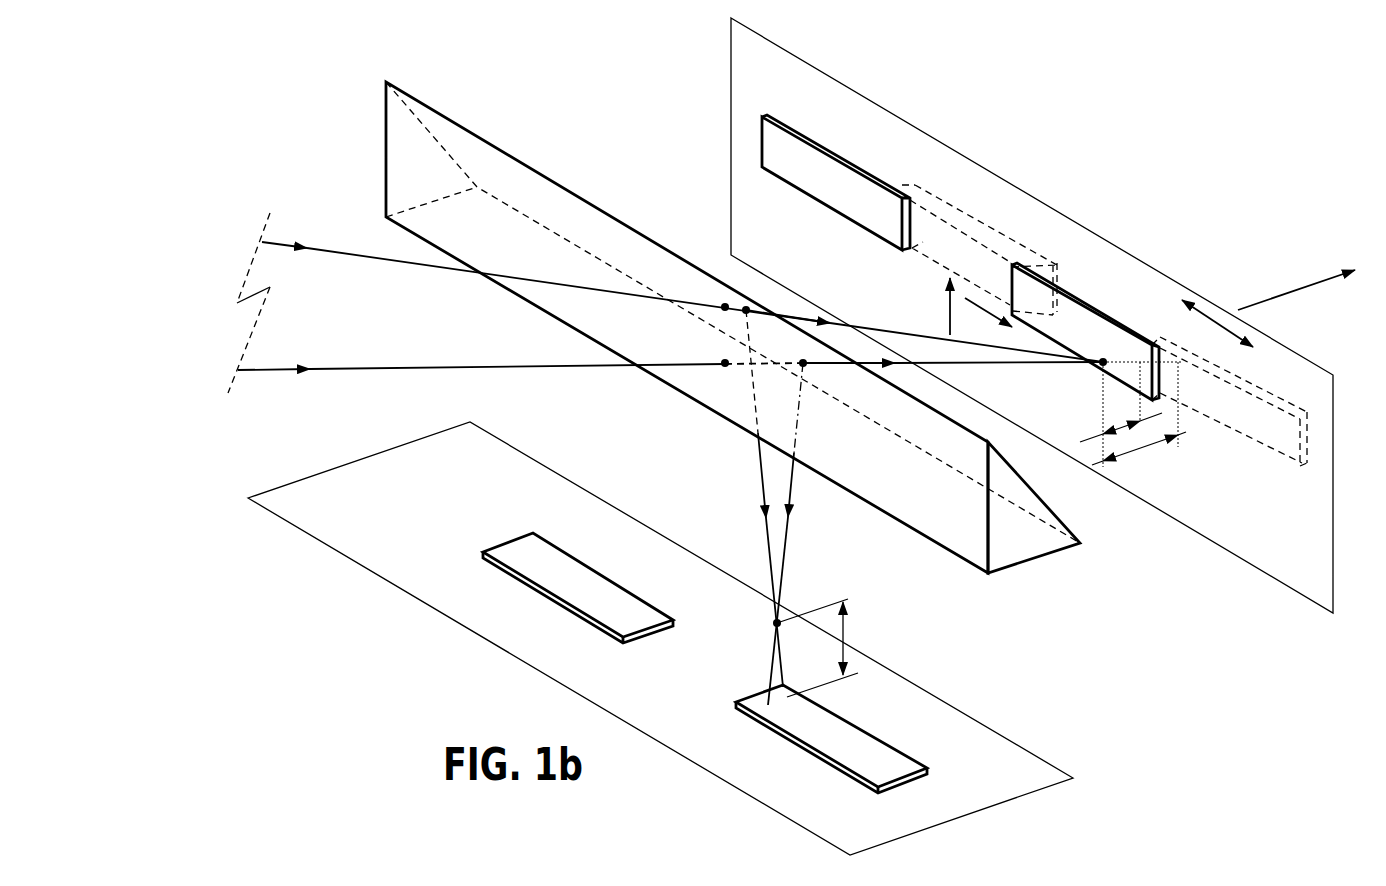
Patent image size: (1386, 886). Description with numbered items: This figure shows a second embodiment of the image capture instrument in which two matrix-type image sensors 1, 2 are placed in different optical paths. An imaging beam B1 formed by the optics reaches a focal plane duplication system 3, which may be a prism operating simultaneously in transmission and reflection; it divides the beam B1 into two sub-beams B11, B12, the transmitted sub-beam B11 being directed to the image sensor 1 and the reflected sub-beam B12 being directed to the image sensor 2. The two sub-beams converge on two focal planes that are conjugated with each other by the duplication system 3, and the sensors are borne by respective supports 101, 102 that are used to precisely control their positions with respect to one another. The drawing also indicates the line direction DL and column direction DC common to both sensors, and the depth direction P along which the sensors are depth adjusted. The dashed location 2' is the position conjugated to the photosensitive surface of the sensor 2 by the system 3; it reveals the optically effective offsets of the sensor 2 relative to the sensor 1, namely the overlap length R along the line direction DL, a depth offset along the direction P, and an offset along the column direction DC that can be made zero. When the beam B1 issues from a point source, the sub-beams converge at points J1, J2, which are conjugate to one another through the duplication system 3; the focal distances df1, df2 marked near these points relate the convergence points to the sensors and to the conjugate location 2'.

The image sensor 1 is at (1107, 315).
The image sensor 2 is at (833, 739).
The conjugate location of sensor 2 2' is at (1229, 421).
The focal plane duplication system 3 is at (432, 108).
The support 101 is at (957, 153).
The support 102 is at (413, 597).
The imaging beam B1 is at (392, 367).
The sub-beam B11 is at (933, 362).
The sub-beam B12 is at (773, 562).
The convergence point J1 is at (1100, 365).
The convergence point J2 is at (782, 618).
The first focal distance df1 is at (1114, 414).
The second focal distance df2 is at (981, 564).
The column direction DC is at (928, 304).
The line direction DL is at (986, 320).
The depth direction P is at (1298, 279).
The overlap length R is at (1206, 317).